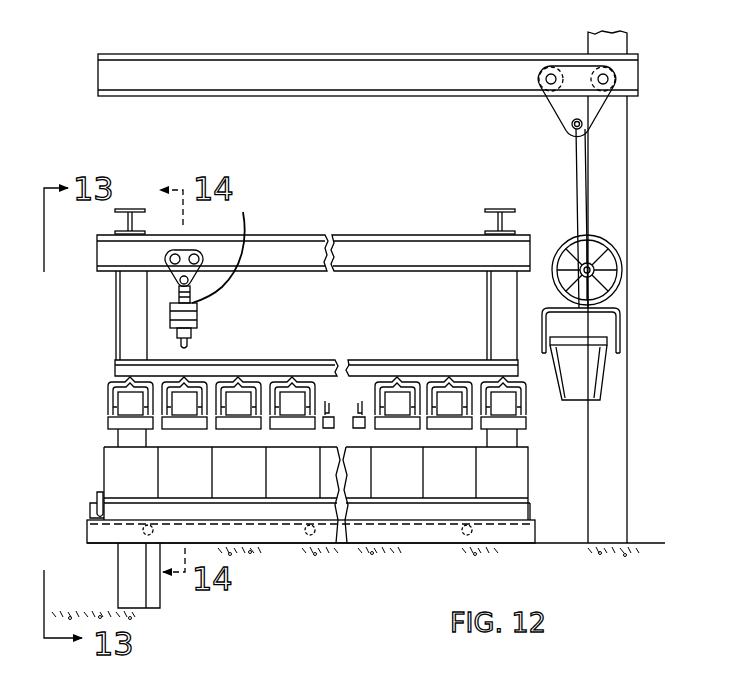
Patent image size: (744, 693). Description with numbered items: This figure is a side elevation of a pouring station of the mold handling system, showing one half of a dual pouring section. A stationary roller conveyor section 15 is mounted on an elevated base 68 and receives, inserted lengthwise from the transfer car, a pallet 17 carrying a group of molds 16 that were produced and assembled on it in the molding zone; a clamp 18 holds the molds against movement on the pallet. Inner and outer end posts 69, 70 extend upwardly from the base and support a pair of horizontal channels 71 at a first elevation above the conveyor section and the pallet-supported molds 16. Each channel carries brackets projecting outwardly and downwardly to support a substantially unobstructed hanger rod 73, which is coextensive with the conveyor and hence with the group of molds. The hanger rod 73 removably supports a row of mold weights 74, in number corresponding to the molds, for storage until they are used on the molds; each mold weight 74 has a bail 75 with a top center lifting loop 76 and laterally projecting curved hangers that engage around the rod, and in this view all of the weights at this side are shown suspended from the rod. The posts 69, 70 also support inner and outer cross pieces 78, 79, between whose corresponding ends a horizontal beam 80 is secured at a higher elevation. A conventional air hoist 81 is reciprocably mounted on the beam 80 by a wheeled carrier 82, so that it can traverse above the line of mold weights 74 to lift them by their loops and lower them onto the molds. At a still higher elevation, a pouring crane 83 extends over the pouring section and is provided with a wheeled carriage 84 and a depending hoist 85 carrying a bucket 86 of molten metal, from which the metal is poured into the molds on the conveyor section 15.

The conveyor section 15 is at (516, 538).
The molds 16 is at (104, 460).
The pallet 17 is at (87, 513).
The clamp 18 is at (95, 492).
The elevated base 68 is at (300, 592).
The inner end post 69 is at (116, 320).
The outer end post 70 is at (487, 316).
The horizontal channel 71 is at (305, 360).
The hanger rod 73 is at (360, 383).
The mold weight 74 is at (108, 424).
The bail 75 is at (108, 400).
The lifting loop 76 is at (240, 383).
The inner cross piece 78 is at (130, 209).
The outer cross piece 79 is at (500, 208).
The horizontal beam 80 is at (401, 235).
The air hoist 81 is at (198, 323).
The wheeled carrier 82 is at (178, 292).
The pouring crane 83 is at (368, 66).
The wheeled carriage 84 is at (550, 99).
The hoist 85 is at (600, 262).
The bucket 86 is at (606, 386).